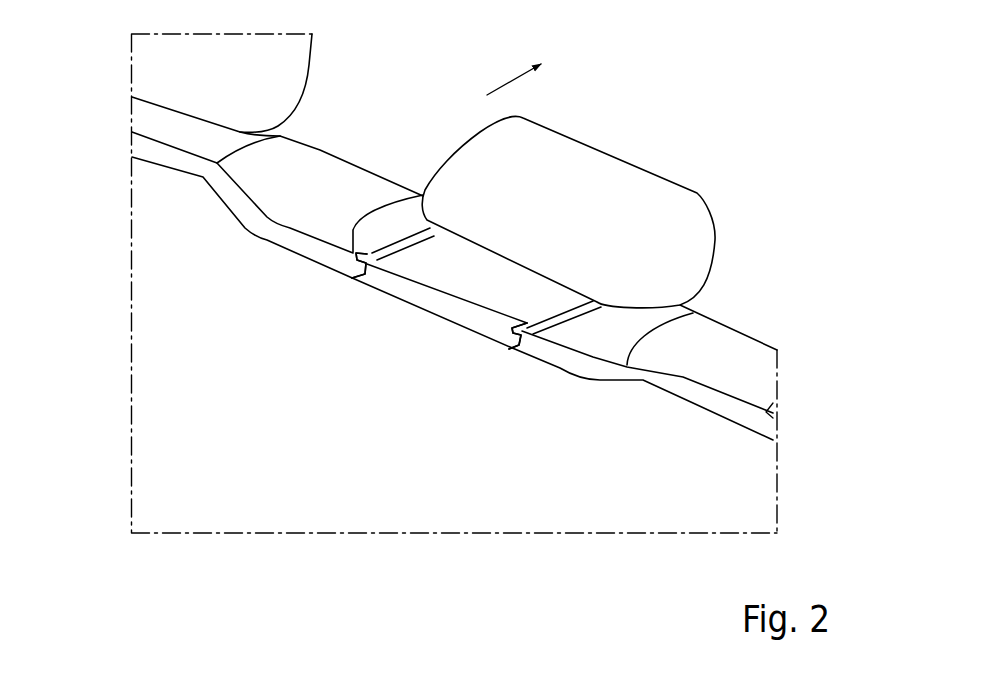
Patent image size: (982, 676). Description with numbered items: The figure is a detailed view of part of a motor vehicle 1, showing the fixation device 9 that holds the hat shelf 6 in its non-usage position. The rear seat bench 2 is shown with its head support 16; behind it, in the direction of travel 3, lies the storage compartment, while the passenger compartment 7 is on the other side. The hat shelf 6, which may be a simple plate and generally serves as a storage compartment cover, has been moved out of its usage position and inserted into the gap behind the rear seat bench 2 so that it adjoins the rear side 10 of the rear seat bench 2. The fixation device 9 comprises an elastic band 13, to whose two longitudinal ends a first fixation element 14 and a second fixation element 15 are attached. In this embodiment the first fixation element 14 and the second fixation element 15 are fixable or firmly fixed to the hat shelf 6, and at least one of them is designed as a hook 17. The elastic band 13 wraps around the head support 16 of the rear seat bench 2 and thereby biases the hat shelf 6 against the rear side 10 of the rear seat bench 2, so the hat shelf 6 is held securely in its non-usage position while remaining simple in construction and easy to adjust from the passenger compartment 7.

The motor vehicle 1 is at (701, 141).
The rear seat bench 2 is at (351, 155).
The direction of travel 3 is at (507, 79).
The hat shelf 6 is at (155, 275).
The passenger compartment 7 is at (647, 133).
The fixation device 9 is at (578, 323).
The rear side 10 is at (282, 220).
The elastic band 13 is at (557, 322).
The first fixation element 14 is at (355, 283).
The second fixation element 15 is at (513, 350).
The head support 16 is at (565, 173).
The hook 17 is at (352, 433).